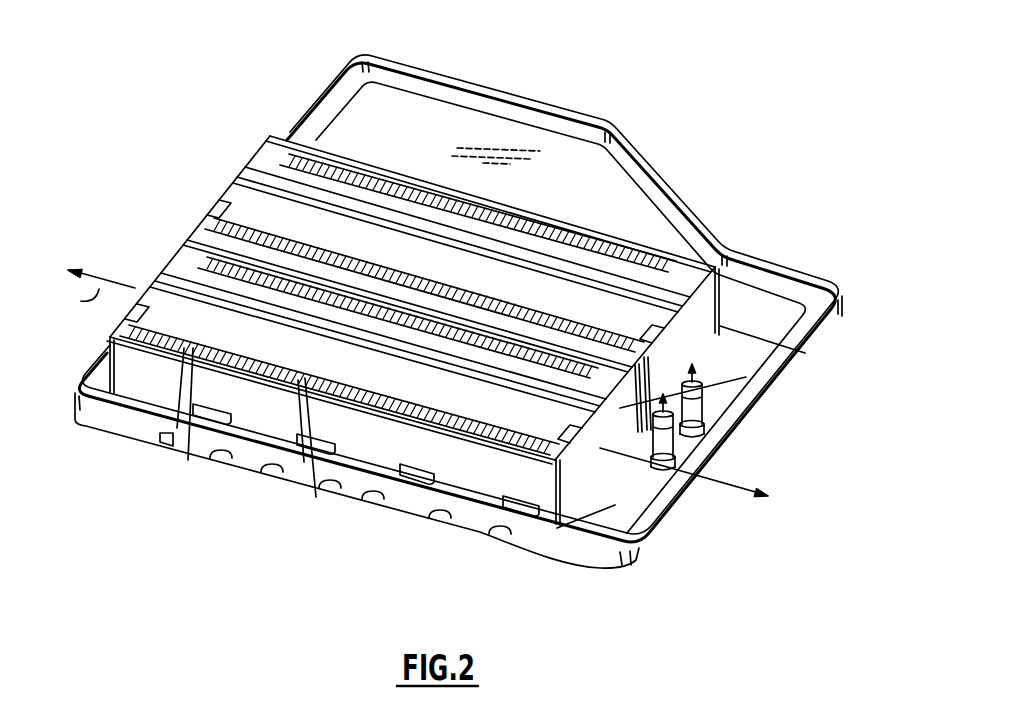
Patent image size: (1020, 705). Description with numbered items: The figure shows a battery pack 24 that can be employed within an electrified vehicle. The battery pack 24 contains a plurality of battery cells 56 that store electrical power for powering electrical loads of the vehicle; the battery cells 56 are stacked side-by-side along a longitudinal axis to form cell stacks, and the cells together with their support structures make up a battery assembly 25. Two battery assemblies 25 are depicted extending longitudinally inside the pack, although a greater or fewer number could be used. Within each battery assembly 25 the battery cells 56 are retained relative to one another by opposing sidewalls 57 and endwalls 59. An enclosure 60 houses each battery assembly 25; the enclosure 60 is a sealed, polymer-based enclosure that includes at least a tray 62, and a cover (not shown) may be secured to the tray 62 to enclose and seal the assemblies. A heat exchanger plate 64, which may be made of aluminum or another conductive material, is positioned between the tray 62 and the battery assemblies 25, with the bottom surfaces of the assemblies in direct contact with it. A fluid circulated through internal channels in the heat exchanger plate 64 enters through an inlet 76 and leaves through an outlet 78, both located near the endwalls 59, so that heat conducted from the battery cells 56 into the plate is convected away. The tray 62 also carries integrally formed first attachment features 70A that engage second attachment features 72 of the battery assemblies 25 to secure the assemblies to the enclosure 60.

The battery pack 24 is at (622, 87).
The battery assembly 25 is at (231, 194).
The battery cell 56 is at (413, 183).
The sidewall 57 is at (148, 383).
The endwall 59 is at (241, 169).
The enclosure 60 is at (613, 557).
The tray 62 is at (438, 515).
The heat exchanger plate 64 is at (746, 377).
The first attachment feature 70A is at (421, 479).
The second attachment feature 72 is at (434, 477).
The inlet 76 is at (694, 414).
The outlet 78 is at (669, 444).